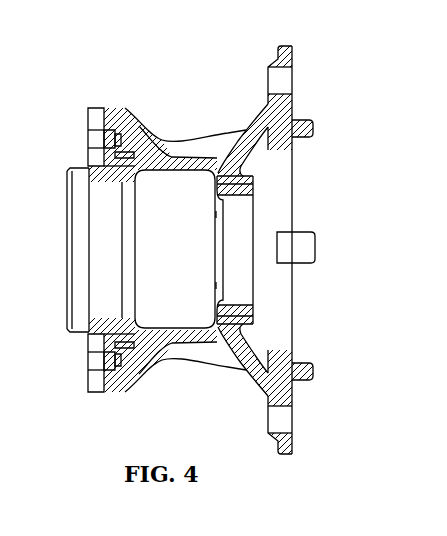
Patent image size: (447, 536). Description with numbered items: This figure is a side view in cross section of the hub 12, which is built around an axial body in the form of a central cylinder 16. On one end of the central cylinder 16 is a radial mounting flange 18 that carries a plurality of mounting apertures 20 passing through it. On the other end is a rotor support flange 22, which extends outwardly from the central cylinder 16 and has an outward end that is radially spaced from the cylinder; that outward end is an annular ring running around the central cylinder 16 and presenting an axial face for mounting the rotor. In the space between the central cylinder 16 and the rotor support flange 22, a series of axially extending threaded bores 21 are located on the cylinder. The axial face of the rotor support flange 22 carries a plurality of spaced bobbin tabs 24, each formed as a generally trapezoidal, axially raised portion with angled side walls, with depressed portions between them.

The hub 12 is at (322, 77).
The central cylinder 16 is at (200, 157).
The radial mounting flange 18 is at (272, 396).
The mounting apertures 20 is at (287, 411).
The threaded bores 21 is at (128, 147).
The rotor support flange 22 is at (121, 396).
The bobbin tabs 24 is at (89, 122).